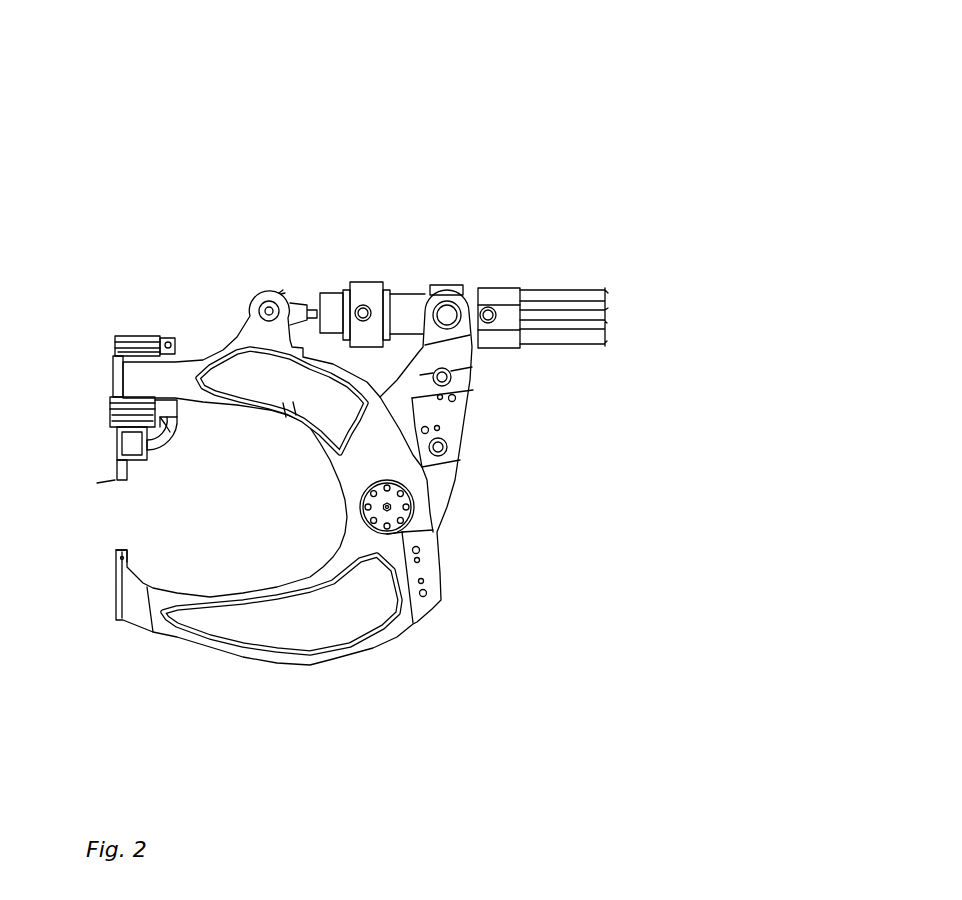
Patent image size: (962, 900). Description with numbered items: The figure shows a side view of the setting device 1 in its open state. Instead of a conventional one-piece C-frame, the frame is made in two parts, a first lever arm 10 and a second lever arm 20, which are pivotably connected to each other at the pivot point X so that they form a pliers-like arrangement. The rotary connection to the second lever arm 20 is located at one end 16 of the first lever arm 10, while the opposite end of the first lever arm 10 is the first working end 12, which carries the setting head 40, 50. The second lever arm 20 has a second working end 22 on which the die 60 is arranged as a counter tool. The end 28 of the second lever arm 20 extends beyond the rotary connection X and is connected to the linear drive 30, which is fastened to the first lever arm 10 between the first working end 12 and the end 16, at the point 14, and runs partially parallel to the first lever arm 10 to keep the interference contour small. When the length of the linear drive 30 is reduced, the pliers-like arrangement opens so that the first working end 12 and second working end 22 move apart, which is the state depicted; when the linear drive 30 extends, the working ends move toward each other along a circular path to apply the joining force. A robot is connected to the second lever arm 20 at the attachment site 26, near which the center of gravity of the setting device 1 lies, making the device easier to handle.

The setting device 1 is at (526, 43).
The first lever arm 10 is at (225, 336).
The first working end 12 is at (132, 372).
The point 14 is at (268, 304).
The end of the first lever arm 16 is at (367, 478).
The second lever arm 20 is at (317, 655).
The second working end 22 is at (130, 558).
The attachment site 26 is at (423, 567).
The end of the second lever arm 28 is at (457, 413).
The linear drive 30 is at (408, 303).
The setting head 40 is at (112, 400).
The setting head 50 is at (117, 428).
The die 60 is at (112, 548).
The pivot point X is at (392, 507).